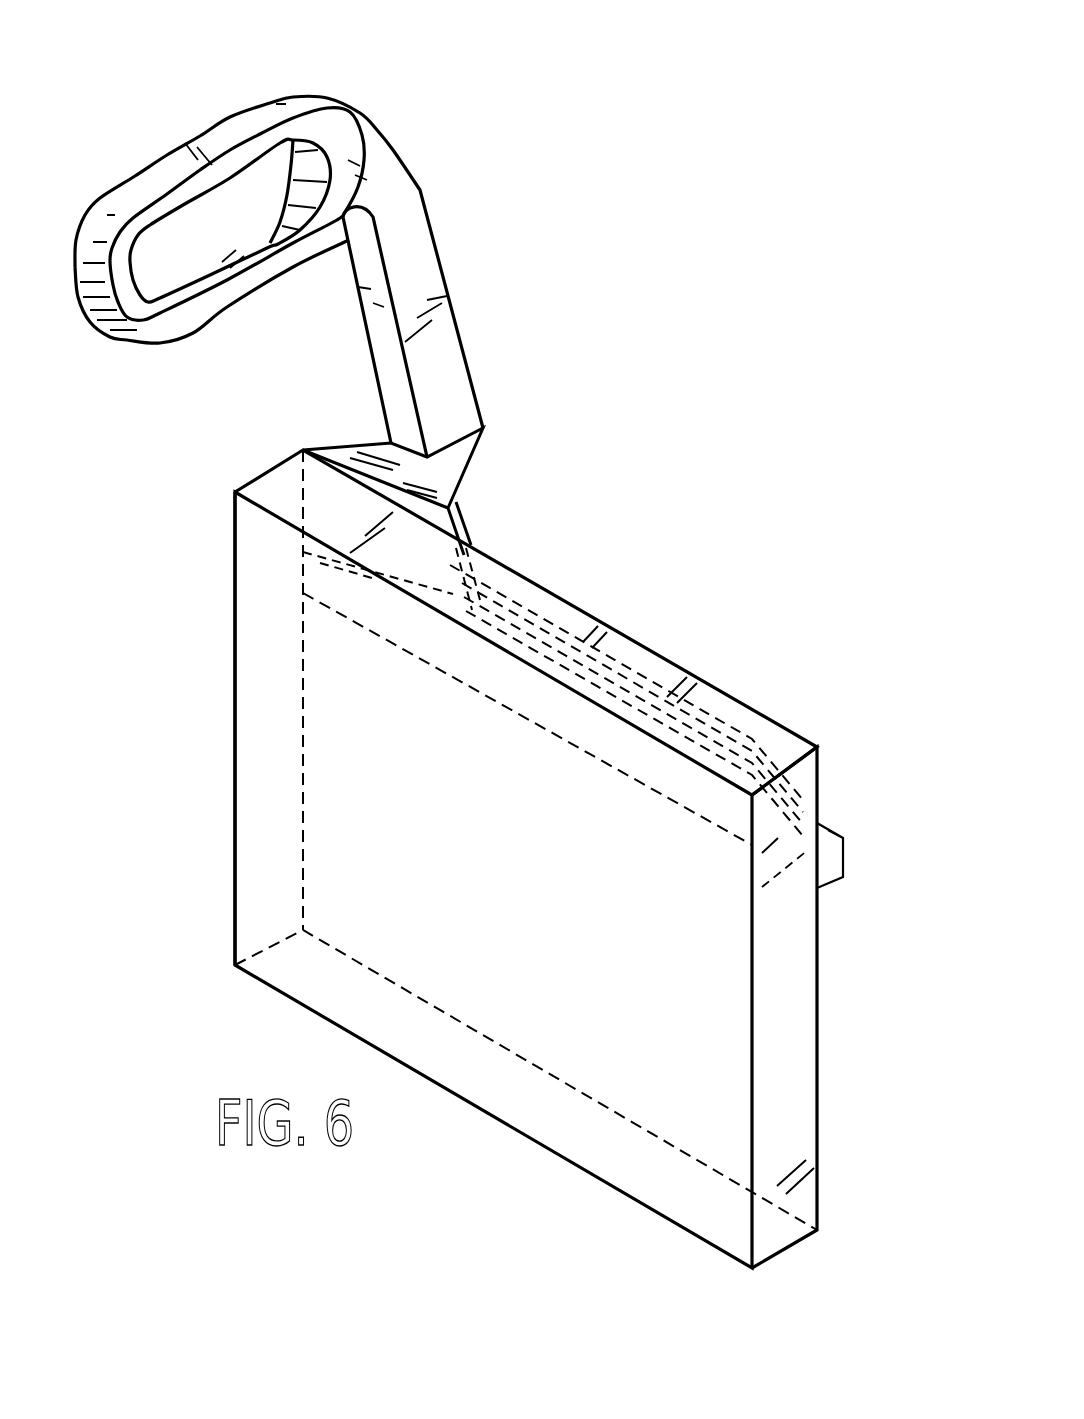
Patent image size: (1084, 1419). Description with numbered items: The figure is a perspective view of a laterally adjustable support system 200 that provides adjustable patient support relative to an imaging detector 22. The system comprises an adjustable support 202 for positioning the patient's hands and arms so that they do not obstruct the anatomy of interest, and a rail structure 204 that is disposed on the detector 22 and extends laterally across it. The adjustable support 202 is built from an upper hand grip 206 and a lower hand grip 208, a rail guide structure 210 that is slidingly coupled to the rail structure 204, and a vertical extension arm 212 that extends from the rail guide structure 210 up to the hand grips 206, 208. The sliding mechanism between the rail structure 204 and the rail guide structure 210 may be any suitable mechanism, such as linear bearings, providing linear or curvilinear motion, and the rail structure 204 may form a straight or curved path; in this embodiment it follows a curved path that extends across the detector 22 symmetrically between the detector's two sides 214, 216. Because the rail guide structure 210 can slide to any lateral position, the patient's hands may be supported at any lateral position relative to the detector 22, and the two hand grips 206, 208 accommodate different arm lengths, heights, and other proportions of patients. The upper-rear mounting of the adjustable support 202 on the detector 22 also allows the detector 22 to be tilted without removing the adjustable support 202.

The laterally adjustable support system 200 is at (794, 324).
The detector 22 is at (582, 1146).
The adjustable support 202 is at (323, 100).
The rail structure 204 is at (600, 630).
The upper hand grip 206 is at (172, 185).
The lower hand grip 208 is at (203, 313).
The rail guide structure 210 is at (440, 520).
The vertical extension arm 212 is at (457, 373).
The side 214 is at (235, 675).
The side 216 is at (790, 997).